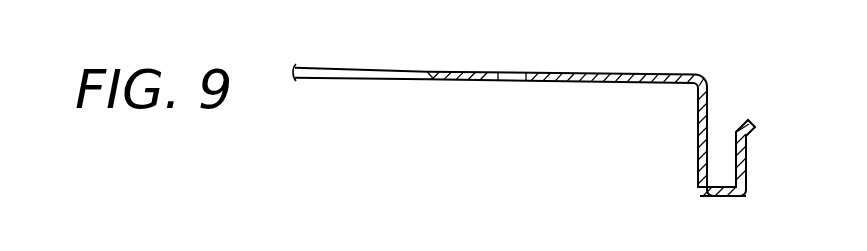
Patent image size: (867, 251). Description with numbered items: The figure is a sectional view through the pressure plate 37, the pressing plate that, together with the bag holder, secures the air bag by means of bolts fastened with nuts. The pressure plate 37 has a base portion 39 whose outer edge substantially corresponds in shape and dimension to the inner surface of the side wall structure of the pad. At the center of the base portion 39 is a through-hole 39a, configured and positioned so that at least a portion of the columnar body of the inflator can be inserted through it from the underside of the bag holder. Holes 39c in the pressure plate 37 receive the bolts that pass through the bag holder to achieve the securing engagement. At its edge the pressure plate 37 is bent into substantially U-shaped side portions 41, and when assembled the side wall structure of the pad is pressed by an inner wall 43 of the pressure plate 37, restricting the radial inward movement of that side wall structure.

The pressure plate 37 is at (700, 71).
The base portion 39 is at (600, 74).
The through-hole 39a is at (427, 71).
The holes 39c is at (518, 72).
The U-shaped side portions 41 is at (725, 197).
The inner wall 43 is at (698, 128).